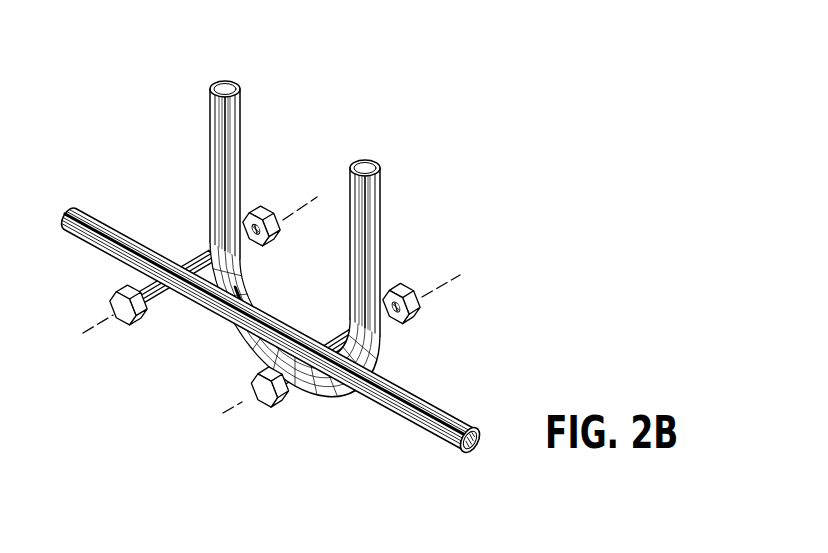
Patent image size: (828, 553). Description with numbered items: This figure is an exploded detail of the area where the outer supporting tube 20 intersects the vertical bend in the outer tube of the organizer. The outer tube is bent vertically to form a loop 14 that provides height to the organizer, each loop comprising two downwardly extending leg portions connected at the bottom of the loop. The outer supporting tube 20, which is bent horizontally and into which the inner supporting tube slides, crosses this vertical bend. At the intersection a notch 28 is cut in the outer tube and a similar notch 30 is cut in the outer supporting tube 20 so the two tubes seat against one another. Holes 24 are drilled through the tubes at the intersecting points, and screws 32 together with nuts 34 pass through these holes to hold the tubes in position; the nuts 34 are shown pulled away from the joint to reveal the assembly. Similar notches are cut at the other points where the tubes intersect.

The loop 14 is at (252, 345).
The outer supporting tube 20 is at (420, 412).
The holes 24 is at (176, 300).
The notch 28 is at (348, 330).
The notch 30 is at (184, 256).
The screws 32 is at (118, 312).
The nuts 34 is at (407, 298).